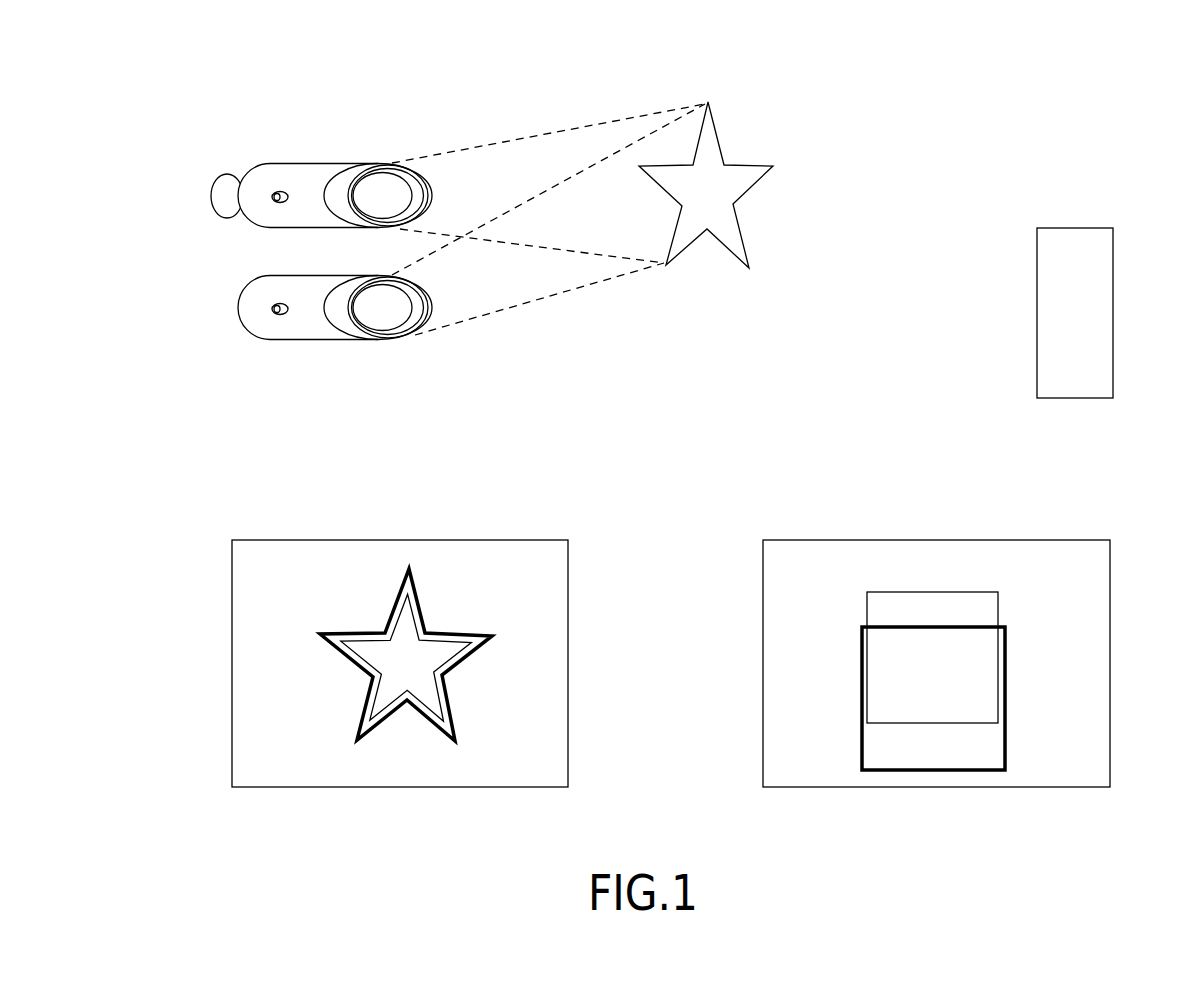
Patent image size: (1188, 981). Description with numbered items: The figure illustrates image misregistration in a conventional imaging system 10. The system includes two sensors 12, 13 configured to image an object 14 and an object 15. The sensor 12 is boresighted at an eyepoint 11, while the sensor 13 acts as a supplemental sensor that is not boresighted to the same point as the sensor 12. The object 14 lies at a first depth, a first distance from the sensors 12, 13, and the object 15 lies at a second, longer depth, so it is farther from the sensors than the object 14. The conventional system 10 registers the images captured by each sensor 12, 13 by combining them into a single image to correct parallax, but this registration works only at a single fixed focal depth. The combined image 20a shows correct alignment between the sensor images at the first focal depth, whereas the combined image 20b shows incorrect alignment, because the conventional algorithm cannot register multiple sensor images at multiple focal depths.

The conventional imaging system 10 is at (170, 82).
The eyepoint 11 is at (222, 198).
The sensor 12 is at (279, 192).
The sensor 13 is at (279, 304).
The object 14 is at (726, 162).
The object 15 is at (1075, 228).
The combined image 20a is at (275, 540).
The combined image 20b is at (810, 540).